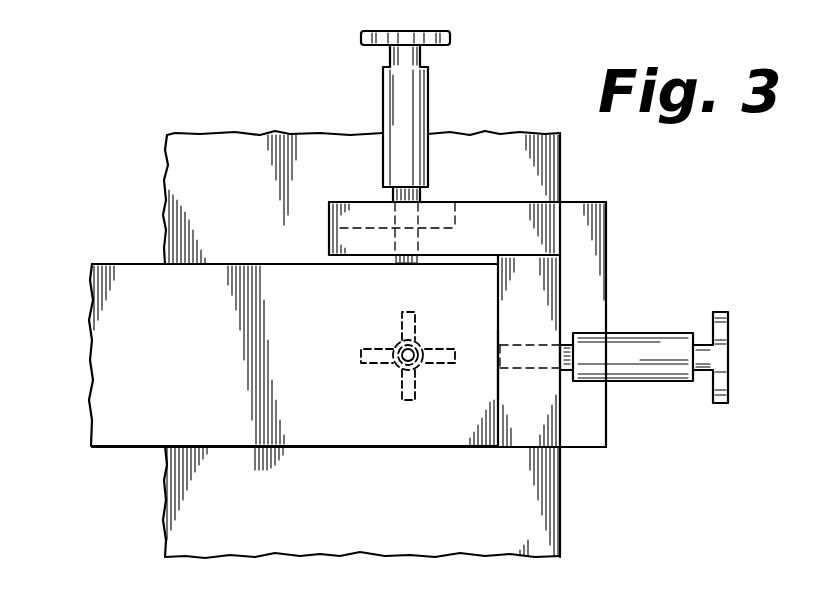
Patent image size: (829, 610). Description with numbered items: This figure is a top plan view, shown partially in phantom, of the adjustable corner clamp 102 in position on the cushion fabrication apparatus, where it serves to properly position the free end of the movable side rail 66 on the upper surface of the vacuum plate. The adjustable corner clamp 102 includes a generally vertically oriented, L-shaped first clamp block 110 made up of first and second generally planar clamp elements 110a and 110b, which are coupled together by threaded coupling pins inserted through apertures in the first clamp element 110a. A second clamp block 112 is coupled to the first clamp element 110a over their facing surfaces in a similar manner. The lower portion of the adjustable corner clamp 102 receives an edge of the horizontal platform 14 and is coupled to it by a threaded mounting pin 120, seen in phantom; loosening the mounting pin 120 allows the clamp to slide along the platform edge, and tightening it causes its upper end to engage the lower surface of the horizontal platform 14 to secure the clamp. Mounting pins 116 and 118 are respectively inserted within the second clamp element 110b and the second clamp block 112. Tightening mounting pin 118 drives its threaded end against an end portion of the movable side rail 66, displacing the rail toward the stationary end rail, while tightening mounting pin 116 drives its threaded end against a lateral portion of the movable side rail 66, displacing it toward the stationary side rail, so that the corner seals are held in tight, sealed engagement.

The adjustable corner clamp 102 is at (140, 110).
The horizontal platform 14 is at (188, 182).
The movable side rail 66 is at (148, 280).
The first clamp block 110 is at (401, 304).
The first clamp element 110a is at (582, 283).
The second clamp element 110b is at (500, 218).
The second clamp block 112 is at (525, 408).
The mounting pin 116 is at (383, 100).
The mounting pin 118 is at (643, 382).
The threaded mounting pin 120 is at (393, 370).